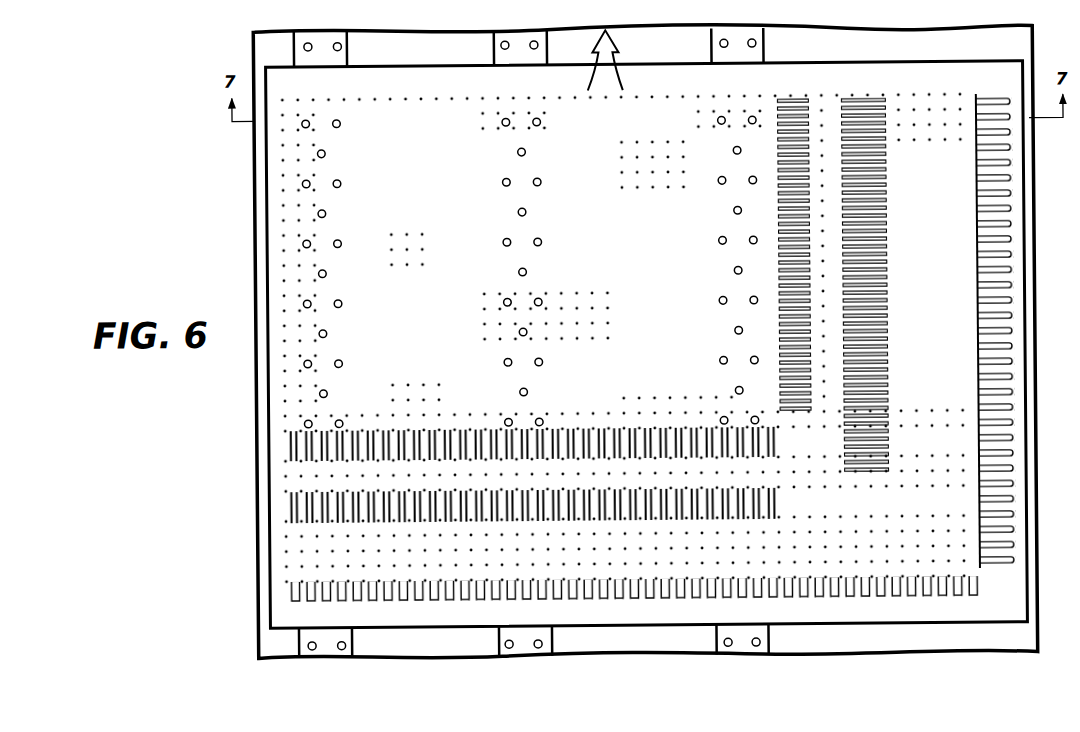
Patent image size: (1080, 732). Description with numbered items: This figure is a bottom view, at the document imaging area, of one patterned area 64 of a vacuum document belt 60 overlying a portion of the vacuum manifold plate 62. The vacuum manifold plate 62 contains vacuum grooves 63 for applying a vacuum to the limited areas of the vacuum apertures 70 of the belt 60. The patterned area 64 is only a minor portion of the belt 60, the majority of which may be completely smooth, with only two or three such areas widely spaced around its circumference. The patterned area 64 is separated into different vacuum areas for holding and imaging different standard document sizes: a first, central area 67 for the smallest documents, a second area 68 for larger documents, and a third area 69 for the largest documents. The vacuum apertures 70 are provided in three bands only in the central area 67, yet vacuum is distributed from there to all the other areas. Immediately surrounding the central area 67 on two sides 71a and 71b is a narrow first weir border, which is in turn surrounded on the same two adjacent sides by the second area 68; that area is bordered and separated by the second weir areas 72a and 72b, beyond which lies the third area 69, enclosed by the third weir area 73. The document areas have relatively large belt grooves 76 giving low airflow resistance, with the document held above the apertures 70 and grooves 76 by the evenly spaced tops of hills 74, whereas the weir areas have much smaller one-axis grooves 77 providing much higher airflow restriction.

The belt 60 is at (1015, 608).
The vacuum manifold plate 62 is at (265, 44).
The vacuum grooves 63 is at (310, 37).
The patterned area 64 is at (282, 259).
The first central area 67 is at (457, 85).
The second area 68 is at (834, 91).
The third area 69 is at (942, 86).
The vacuum apertures 70 is at (326, 148).
The first weir area side 71a is at (289, 441).
The first weir area side 71b is at (794, 100).
The second weir area 72a is at (288, 513).
The second weir area 72b is at (863, 98).
The third weir area 73 is at (981, 99).
The tops of hills 74 is at (452, 251).
The belt grooves 76 is at (646, 143).
The weir grooves 77 is at (982, 172).